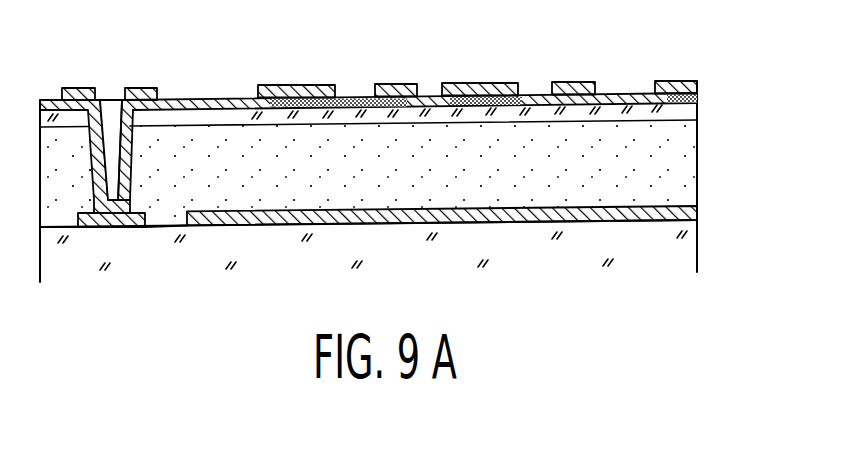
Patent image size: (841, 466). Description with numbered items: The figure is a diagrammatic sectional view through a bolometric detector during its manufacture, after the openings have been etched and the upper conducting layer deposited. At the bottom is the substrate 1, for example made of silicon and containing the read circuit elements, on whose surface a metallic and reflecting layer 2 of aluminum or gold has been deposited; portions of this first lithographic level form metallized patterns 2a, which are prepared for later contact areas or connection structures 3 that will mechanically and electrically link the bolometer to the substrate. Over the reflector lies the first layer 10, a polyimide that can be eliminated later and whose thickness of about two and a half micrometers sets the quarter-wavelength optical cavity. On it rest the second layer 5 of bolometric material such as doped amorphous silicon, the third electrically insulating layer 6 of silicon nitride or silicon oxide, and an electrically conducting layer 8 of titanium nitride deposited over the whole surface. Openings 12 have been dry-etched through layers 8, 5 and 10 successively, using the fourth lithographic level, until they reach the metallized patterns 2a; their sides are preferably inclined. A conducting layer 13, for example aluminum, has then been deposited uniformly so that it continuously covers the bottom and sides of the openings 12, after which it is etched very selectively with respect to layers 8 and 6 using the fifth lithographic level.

The substrate 1 is at (677, 257).
The reflecting layer 2 is at (658, 212).
The metallized patterns 2a is at (131, 233).
The connection structures 3 is at (146, 78).
The second layer 5 is at (617, 107).
The third electrically insulating layer 6 is at (307, 87).
The electrically conducting layer 8 is at (480, 87).
The first layer 10 is at (677, 142).
The openings 12 is at (109, 108).
The conducting layer 13 is at (80, 97).